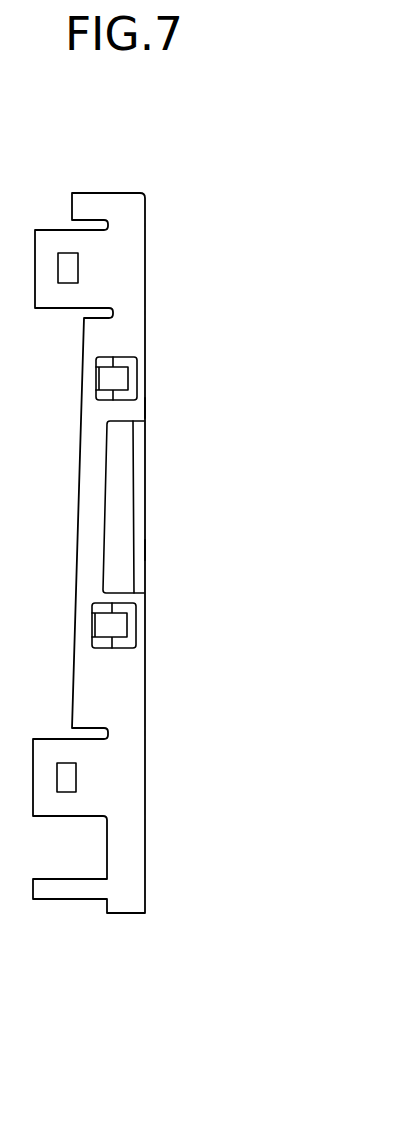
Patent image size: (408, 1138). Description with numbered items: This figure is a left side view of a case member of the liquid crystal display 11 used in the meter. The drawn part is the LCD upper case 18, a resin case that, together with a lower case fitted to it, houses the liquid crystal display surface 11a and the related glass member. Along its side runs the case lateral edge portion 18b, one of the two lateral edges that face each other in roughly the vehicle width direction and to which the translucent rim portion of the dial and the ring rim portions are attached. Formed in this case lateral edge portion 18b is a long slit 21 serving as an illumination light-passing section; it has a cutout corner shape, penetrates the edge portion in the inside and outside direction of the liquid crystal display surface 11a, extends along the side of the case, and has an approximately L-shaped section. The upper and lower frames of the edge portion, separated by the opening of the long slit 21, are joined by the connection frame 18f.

The liquid crystal display 11 is at (149, 507).
The LCD upper case 18 is at (132, 232).
The liquid crystal display surface 11a is at (145, 407).
The long slit 21 is at (128, 490).
The connection frame 18f is at (137, 507).
The case lateral edge portion 18b is at (148, 546).